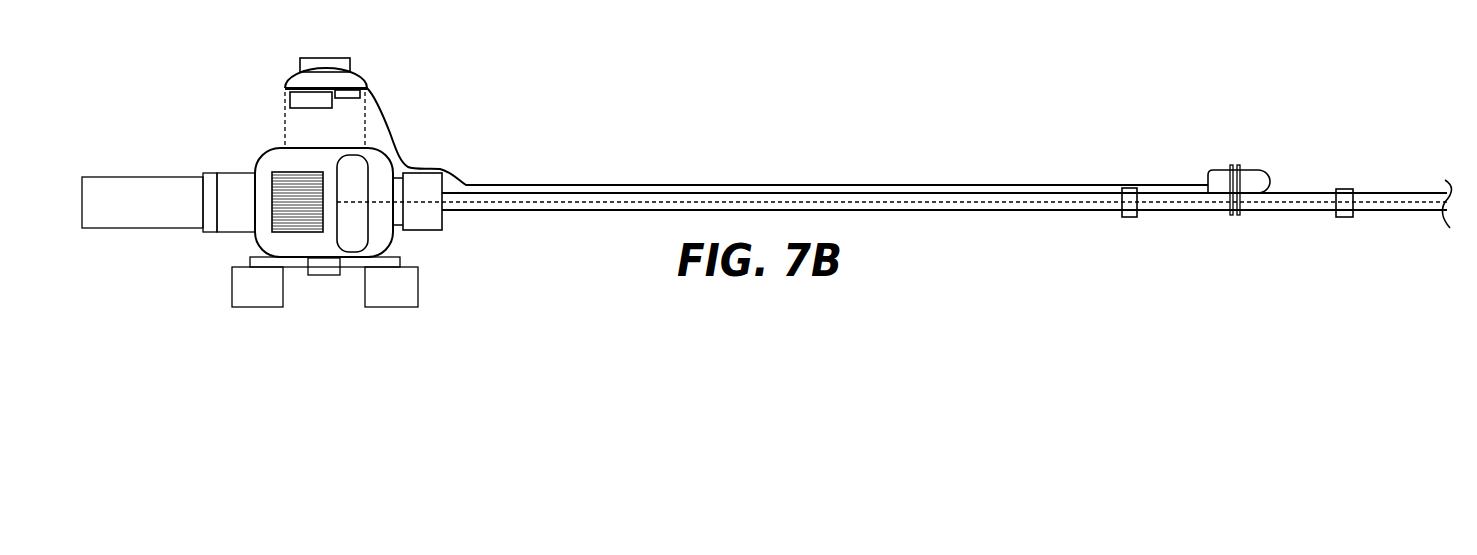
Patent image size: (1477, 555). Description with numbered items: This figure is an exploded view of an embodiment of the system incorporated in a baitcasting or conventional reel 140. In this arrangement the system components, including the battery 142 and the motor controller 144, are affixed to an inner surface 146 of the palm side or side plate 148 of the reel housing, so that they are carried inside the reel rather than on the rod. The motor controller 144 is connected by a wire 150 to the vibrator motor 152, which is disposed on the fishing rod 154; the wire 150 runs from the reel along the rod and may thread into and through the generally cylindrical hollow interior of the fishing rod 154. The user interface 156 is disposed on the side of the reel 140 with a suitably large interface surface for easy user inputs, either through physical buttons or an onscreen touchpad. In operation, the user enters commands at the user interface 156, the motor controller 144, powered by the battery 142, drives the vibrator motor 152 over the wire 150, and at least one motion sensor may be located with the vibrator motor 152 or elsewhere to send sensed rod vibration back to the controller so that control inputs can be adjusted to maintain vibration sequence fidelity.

The baitcasting or conventional reel 140 is at (265, 248).
The battery 142 is at (285, 108).
The motor controller 144 is at (347, 98).
The inner surface 146 is at (278, 96).
The side plate 148 is at (303, 80).
The wire 150 is at (902, 183).
The vibrator motor 152 is at (1222, 168).
The fishing rod 154 is at (1172, 212).
The user interface 156 is at (325, 60).